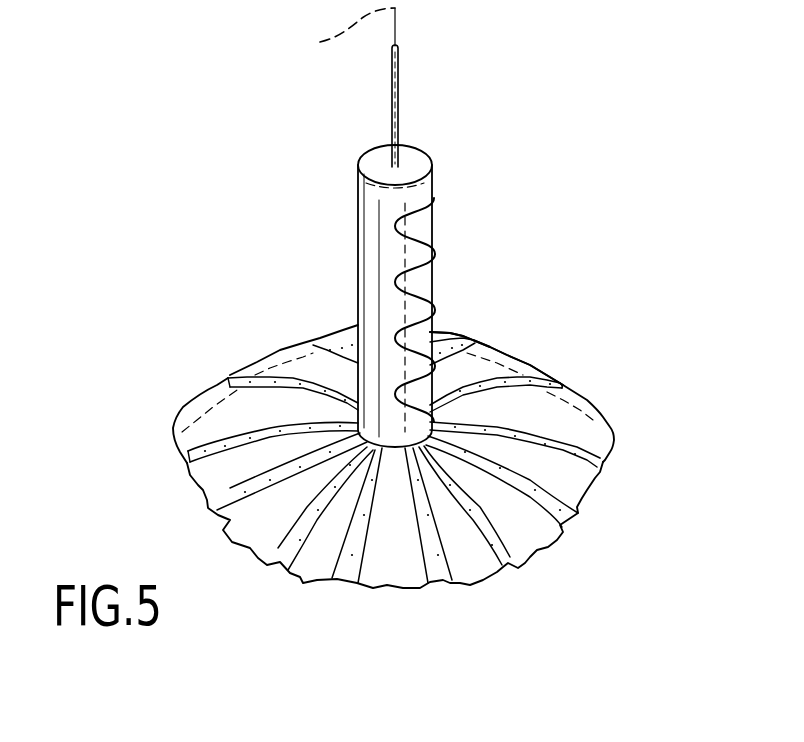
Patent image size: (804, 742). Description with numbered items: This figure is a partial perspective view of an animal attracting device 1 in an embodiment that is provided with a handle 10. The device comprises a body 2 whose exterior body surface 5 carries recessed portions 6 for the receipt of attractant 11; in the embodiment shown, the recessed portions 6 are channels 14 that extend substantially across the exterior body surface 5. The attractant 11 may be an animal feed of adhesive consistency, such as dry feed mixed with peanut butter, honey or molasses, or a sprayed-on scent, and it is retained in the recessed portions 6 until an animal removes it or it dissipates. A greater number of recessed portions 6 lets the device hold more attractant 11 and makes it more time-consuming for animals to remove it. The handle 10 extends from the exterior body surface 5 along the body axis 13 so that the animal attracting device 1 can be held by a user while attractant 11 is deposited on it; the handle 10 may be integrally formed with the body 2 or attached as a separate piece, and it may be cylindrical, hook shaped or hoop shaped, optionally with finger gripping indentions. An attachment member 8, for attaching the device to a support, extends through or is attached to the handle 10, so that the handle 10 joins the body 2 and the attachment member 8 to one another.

The animal attracting device 1 is at (140, 389).
The body 2 is at (532, 533).
The exterior body surface 5 is at (509, 345).
The recessed portion 6 is at (523, 380).
The attachment member 8 is at (398, 70).
The handle 10 is at (372, 265).
The attractant 11 is at (197, 453).
The body axis 13 is at (339, 35).
The channel 14 is at (589, 431).